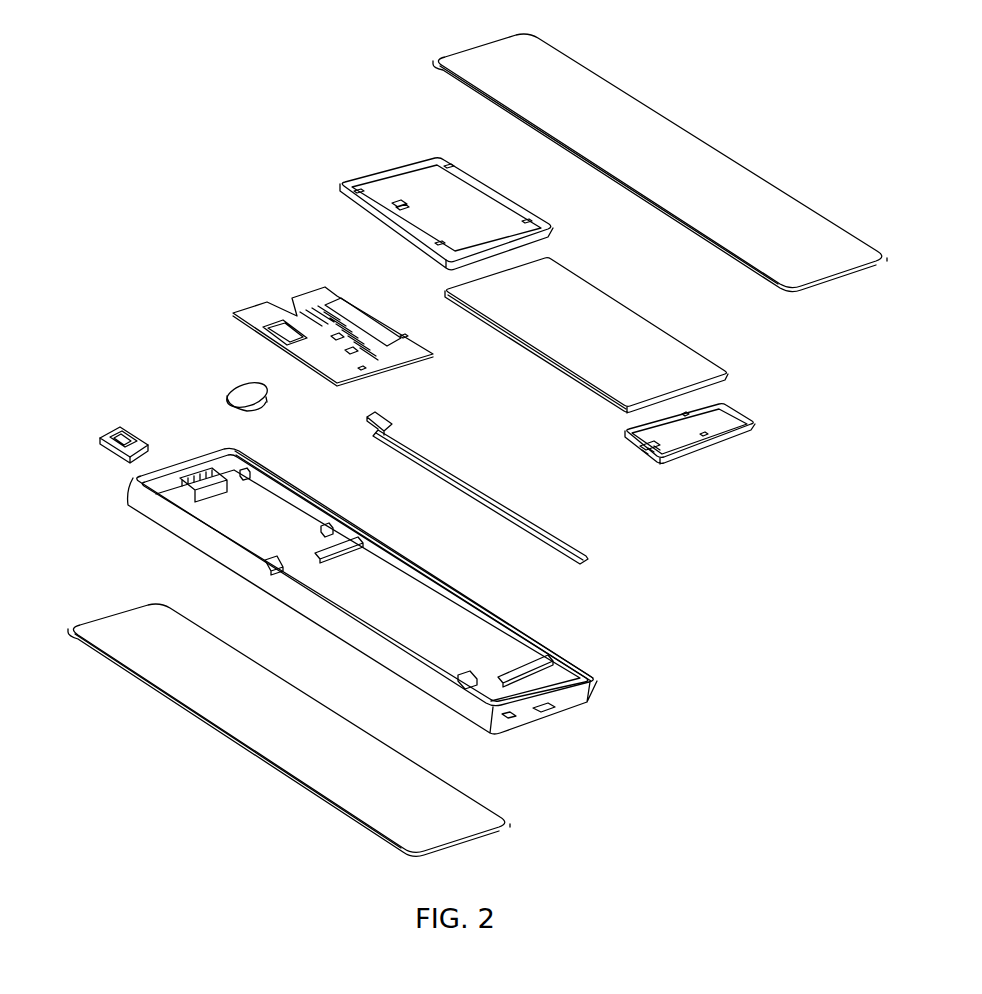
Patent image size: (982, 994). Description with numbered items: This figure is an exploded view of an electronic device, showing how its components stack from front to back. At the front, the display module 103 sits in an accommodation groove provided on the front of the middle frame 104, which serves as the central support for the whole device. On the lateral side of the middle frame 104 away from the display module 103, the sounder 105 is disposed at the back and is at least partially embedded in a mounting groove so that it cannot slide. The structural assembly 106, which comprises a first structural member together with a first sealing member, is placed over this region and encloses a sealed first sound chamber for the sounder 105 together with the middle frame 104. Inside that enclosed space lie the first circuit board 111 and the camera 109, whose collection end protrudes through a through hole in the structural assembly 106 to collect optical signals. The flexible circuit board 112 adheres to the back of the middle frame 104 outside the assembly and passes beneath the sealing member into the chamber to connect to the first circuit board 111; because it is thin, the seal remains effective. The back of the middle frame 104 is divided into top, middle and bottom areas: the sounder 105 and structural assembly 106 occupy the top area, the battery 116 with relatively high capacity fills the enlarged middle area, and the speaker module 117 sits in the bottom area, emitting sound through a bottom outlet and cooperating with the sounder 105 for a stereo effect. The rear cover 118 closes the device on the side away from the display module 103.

The rear cover 118 is at (433, 60).
The structural assembly 106 is at (400, 162).
The first circuit board 111 is at (307, 292).
The sounder 105 is at (237, 385).
The camera 109 is at (105, 453).
The battery 116 is at (665, 328).
The speaker module 117 is at (720, 445).
The flexible circuit board 112 is at (583, 537).
The middle frame 104 is at (562, 643).
The display module 103 is at (507, 800).